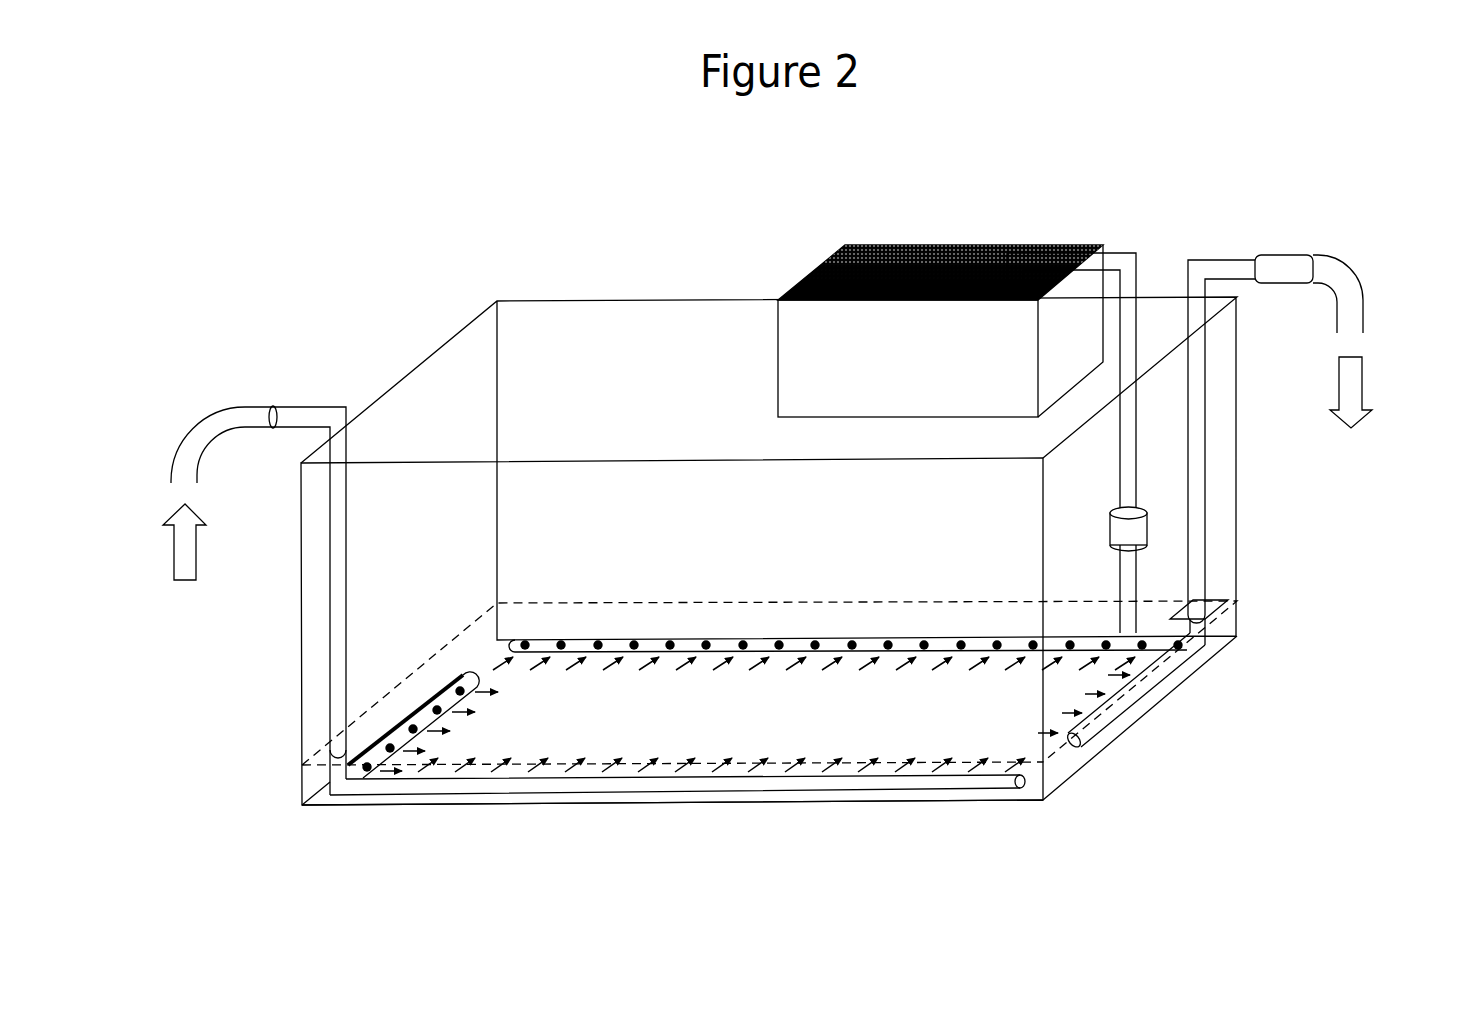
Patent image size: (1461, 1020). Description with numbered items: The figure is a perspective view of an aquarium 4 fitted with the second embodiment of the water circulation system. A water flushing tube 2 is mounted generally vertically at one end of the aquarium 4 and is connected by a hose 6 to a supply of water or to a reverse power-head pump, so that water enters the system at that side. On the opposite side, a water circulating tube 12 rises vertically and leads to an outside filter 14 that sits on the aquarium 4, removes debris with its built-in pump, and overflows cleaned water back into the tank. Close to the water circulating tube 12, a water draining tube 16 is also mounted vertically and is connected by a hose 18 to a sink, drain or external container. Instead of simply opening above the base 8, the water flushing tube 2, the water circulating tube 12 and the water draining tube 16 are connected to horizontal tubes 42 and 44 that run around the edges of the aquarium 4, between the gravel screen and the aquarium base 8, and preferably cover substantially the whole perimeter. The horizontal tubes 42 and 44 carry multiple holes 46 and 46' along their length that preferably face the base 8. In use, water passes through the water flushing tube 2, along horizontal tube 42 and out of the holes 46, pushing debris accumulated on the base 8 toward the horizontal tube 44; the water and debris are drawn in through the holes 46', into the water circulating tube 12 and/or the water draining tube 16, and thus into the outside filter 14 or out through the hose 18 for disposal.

The water flushing tube 2 is at (312, 407).
The aquarium 4 is at (645, 808).
The hose 6 is at (170, 455).
The base 8 is at (672, 838).
The water circulating tube 12 is at (1139, 262).
The outside filter 14 is at (957, 245).
The water draining tube 16 is at (1226, 258).
The hose 18 is at (1363, 305).
The horizontal tube 42 is at (980, 783).
The horizontal tube 44 is at (1163, 672).
The holes 46 is at (423, 776).
The holes 46' is at (802, 735).